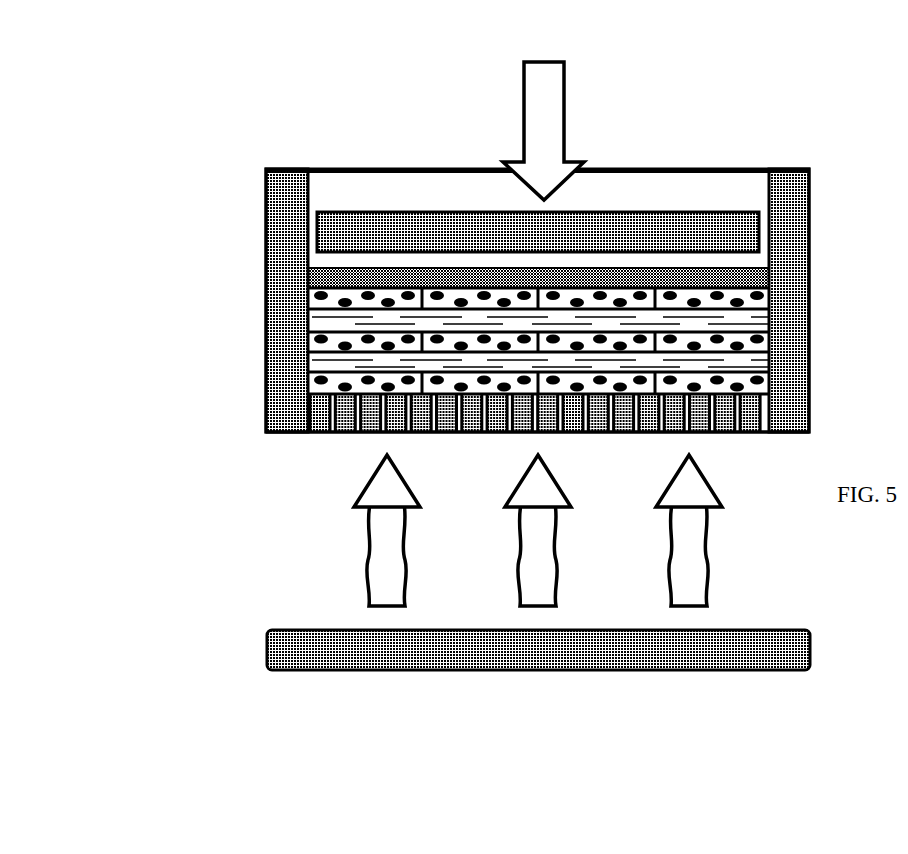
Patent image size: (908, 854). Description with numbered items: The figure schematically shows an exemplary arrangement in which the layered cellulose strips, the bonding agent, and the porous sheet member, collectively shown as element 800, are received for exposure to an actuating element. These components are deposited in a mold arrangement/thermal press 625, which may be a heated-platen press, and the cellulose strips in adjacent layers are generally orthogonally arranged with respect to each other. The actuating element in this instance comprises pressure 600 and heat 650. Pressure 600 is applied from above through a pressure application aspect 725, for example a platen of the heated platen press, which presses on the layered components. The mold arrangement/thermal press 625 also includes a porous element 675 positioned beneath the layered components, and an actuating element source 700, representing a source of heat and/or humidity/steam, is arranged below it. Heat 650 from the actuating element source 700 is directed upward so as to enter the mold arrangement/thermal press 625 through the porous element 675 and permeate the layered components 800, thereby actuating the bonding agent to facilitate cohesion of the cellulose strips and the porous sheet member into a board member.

The pressure 600 is at (512, 132).
The mold arrangement/thermal press 625 is at (224, 282).
The pressure application aspect 725 is at (619, 210).
The layered cellulose strips, bonding agent, and porous sheet member 800 is at (758, 322).
The porous element 675 is at (350, 435).
The heat 650 is at (344, 582).
The actuating element source 700 is at (250, 643).